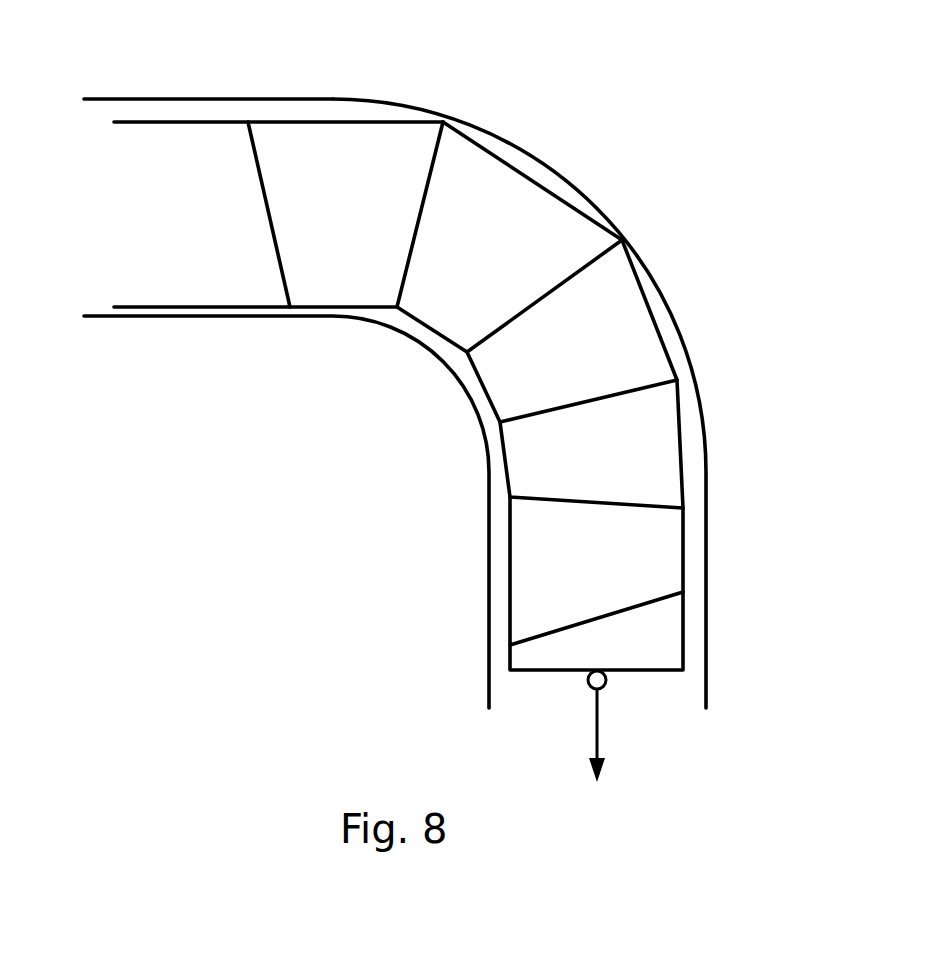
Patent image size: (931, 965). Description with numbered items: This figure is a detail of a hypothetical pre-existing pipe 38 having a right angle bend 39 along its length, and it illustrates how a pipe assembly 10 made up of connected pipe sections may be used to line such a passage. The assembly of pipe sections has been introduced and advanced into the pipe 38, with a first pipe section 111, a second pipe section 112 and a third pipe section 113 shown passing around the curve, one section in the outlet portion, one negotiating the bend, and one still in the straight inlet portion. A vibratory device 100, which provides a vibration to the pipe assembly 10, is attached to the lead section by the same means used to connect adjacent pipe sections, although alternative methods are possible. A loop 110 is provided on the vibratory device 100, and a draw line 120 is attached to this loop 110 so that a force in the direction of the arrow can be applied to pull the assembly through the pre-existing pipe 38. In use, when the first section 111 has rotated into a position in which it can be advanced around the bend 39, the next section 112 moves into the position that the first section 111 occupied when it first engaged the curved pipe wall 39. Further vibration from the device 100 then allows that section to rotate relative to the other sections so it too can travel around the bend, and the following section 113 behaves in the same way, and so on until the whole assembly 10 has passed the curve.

The pipe assembly 10 is at (535, 408).
The pipe section 11₁ 111 is at (622, 337).
The pipe section 11₂ 112 is at (447, 305).
The pipe section 11₃ 113 is at (340, 153).
The pre-existing pipe 38 is at (130, 98).
The right angle bend 39 is at (698, 373).
The vibratory device 100 is at (660, 638).
The loop 110 is at (607, 684).
The draw line 120 is at (600, 733).